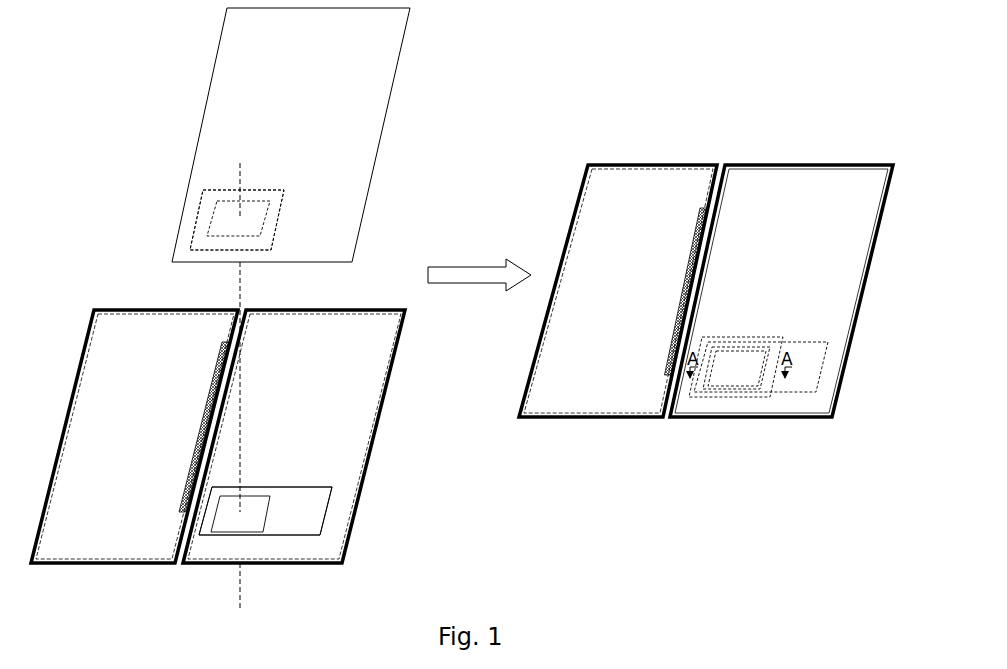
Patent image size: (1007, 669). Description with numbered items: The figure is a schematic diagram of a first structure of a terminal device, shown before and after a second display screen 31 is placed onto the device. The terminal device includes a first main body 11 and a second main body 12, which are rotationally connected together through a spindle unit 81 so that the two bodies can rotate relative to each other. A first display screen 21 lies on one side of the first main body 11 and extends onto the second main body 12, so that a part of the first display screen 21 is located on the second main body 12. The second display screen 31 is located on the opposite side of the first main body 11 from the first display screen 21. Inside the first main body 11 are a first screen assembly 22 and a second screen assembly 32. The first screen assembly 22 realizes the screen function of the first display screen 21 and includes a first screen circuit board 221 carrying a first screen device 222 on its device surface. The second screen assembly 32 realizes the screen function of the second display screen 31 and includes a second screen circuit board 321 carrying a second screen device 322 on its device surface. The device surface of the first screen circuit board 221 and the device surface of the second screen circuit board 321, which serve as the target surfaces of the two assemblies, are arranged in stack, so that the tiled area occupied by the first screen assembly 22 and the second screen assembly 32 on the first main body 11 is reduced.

The first main body 11 is at (382, 406).
The second main body 12 is at (61, 433).
The first display screen 21 is at (127, 310).
The first screen assembly 22 is at (274, 484).
The first screen circuit board 221 is at (272, 535).
The first screen device 222 is at (269, 503).
The second display screen 31 is at (219, 52).
The second screen assembly 32 is at (254, 188).
The second screen circuit board 321 is at (284, 202).
The second screen device 322 is at (266, 219).
The spindle unit 81 is at (208, 428).